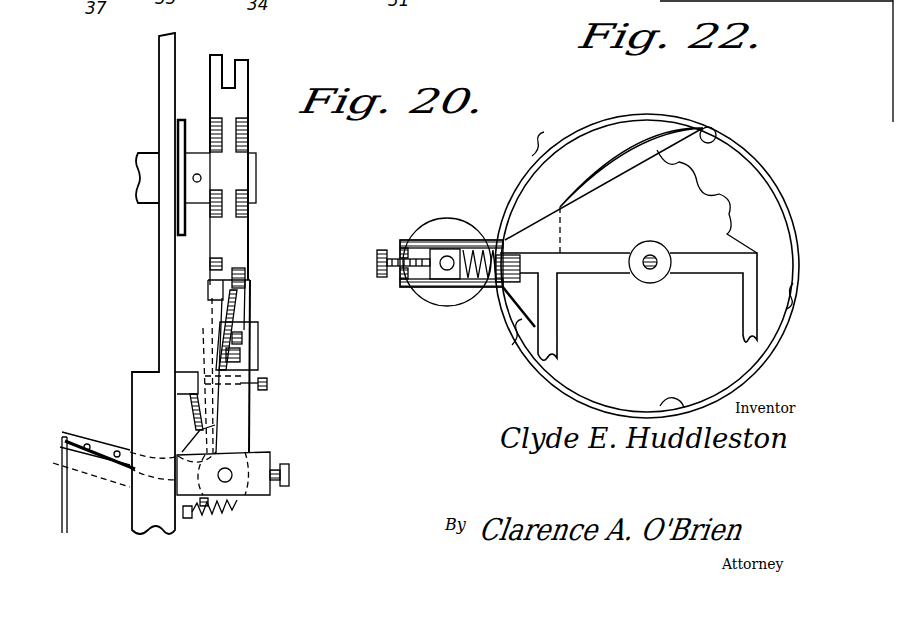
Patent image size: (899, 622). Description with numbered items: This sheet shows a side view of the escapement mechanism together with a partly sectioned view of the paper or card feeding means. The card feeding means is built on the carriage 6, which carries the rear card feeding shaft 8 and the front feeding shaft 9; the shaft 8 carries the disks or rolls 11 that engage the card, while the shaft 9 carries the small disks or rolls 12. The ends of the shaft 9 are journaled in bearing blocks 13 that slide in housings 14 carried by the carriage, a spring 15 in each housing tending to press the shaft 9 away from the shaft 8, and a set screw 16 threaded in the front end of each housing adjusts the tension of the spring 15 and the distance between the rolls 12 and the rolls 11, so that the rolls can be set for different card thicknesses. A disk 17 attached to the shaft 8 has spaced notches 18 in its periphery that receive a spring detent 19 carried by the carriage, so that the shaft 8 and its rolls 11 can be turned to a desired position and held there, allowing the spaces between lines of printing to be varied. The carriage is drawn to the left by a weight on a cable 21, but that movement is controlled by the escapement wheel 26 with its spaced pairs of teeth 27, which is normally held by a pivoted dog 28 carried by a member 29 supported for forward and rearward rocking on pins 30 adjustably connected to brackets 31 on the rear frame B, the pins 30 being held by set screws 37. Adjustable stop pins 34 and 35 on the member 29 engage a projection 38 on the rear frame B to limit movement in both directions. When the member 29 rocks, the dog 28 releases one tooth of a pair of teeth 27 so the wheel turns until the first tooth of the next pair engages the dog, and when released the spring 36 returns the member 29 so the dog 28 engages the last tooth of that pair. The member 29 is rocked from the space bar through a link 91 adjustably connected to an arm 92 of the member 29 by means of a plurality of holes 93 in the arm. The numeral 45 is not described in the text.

In FIG. 20, the rear frame B is at (159, 318).
In FIG. 22, the carriage 6 is at (700, 192).
In FIG. 22, the rear card feeding shaft 8 is at (650, 285).
In FIG. 22, the front feeding shaft 9 is at (450, 256).
In FIG. 22, the disks or rolls 11 is at (638, 118).
In FIG. 22, the small disks or rolls 12 is at (452, 305).
In FIG. 22, the bearing blocks 13 is at (437, 292).
In FIG. 22, the housings 14 is at (415, 240).
In FIG. 22, the spring 15 is at (497, 290).
In FIG. 22, the set screw 16 is at (380, 278).
In FIG. 22, the disk 17 is at (585, 378).
In FIG. 22, the notches 18 is at (538, 150).
In FIG. 22, the spring detent 19 is at (710, 127).
In FIG. 20, the cable 21 is at (250, 260).
In FIG. 20, the escapement wheel 26 is at (240, 178).
In FIG. 20, the pairs of teeth 27 is at (237, 60).
In FIG. 20, the pivoted dog 28 is at (245, 305).
In FIG. 20, the member 29 is at (235, 430).
In FIG. 20, the pins 30 is at (232, 479).
In FIG. 20, the brackets 31 is at (270, 492).
In FIG. 20, the adjustable stop pin 34 is at (190, 405).
In FIG. 20, the adjustable stop pin 35 is at (267, 385).
In FIG. 20, the spring 36 is at (237, 505).
In FIG. 20, the set screws 37 is at (290, 470).
In FIG. 20, the projection 38 is at (175, 380).
In FIG. 22, the member 45 is at (535, 0).
In FIG. 20, the link 91 is at (62, 528).
In FIG. 20, the arm 92 is at (75, 438).
In FIG. 20, the holes 93 is at (117, 451).